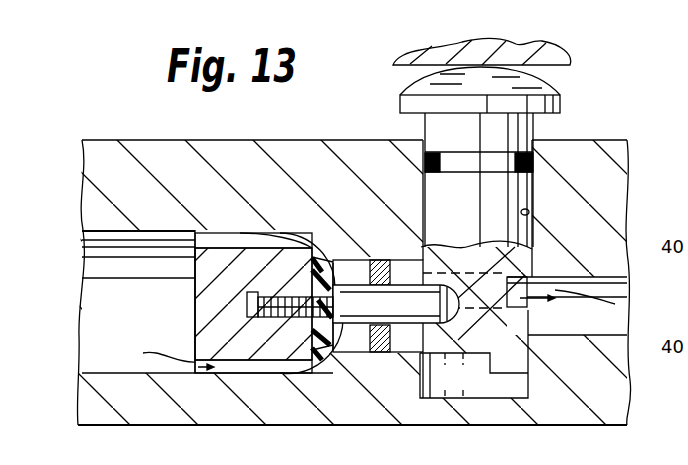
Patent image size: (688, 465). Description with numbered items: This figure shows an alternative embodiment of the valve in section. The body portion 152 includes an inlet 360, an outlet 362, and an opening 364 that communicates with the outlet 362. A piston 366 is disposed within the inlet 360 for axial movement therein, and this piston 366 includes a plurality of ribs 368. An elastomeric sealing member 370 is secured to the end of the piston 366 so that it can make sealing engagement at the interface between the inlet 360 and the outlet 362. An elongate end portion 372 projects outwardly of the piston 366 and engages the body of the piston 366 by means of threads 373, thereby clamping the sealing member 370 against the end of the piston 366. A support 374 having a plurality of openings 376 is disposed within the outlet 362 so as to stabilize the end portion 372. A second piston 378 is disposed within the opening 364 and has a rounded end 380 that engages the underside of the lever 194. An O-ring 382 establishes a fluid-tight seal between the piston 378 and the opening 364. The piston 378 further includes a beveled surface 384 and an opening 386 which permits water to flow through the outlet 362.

The body portion 152 is at (606, 152).
The lever 194 is at (538, 54).
The inlet 360 is at (95, 256).
The outlet 362 is at (600, 306).
The opening 364 is at (546, 212).
The piston 366 is at (205, 289).
The ribs 368 is at (226, 243).
The elastomeric sealing member 370 is at (330, 262).
The elongate end portion 372 is at (398, 310).
The threads 373 is at (300, 318).
The support 374 is at (385, 260).
The openings 376 is at (399, 306).
The piston 378 is at (435, 126).
The rounded end 380 is at (535, 91).
The O-ring 382 is at (435, 163).
The beveled surface 384 is at (474, 354).
The opening 386 is at (556, 278).